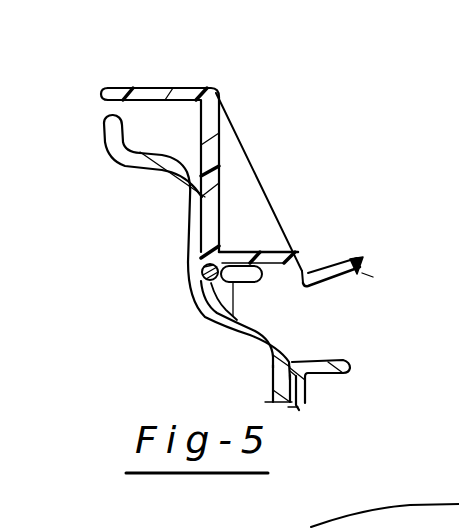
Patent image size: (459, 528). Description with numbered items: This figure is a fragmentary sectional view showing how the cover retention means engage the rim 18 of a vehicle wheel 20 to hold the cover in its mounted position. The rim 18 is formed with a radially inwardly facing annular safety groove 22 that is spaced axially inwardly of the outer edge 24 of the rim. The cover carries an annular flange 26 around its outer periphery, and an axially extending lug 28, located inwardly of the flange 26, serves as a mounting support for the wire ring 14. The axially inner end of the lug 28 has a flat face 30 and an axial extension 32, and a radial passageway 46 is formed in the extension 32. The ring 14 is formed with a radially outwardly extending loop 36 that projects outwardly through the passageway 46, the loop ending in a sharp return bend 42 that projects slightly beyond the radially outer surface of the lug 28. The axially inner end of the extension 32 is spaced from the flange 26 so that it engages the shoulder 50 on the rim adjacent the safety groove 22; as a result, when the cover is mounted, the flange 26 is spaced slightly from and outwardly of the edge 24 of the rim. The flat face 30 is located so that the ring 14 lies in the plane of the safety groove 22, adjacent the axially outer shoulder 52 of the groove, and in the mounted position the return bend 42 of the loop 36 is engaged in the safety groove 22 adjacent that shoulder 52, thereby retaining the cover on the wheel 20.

The wire ring 14 is at (273, 249).
The rim 18 is at (188, 208).
The wheel 20 is at (285, 420).
The safety groove 22 is at (207, 289).
The outer edge of the rim 24 is at (112, 118).
The annular flange 26 is at (157, 88).
The lug 28 is at (238, 167).
The flat face 30 is at (313, 260).
The axial extension 32 is at (237, 291).
The loop 36 is at (228, 242).
The return bend 42 is at (201, 270).
The radial passageway 46 is at (215, 293).
The shoulder on the wheel rim 50 is at (262, 330).
The axially outer shoulder of the safety groove 52 is at (190, 237).